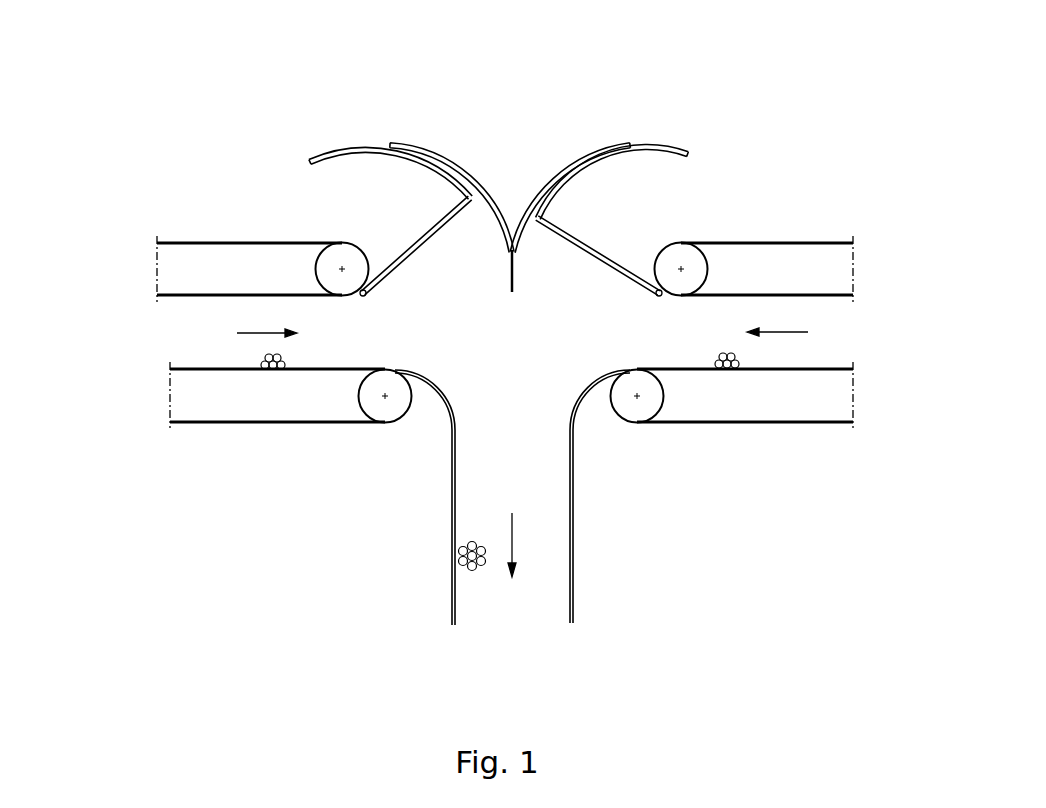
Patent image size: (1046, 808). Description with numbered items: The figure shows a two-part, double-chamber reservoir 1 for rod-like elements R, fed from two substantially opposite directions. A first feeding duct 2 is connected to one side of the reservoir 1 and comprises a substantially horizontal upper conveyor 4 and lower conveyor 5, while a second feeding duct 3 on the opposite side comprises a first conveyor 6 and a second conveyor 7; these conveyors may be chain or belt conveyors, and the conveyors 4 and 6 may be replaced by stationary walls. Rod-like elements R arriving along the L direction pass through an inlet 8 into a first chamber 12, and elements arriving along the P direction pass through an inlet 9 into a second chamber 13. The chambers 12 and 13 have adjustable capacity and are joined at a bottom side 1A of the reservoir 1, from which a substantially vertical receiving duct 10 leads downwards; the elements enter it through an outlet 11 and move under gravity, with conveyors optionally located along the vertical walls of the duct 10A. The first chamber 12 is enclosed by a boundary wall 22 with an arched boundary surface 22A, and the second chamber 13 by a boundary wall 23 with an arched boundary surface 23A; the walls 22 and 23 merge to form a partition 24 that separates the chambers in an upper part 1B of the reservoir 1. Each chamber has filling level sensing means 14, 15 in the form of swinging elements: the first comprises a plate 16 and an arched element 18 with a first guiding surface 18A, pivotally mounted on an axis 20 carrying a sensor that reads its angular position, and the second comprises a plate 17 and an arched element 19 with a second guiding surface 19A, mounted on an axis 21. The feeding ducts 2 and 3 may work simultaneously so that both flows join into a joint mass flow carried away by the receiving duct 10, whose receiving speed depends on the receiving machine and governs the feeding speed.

The reservoir 1 is at (501, 181).
The bottom side of the reservoir 1A is at (510, 350).
The upper part of the reservoir 1B is at (500, 282).
The first feeding duct 2 is at (195, 333).
The second feeding duct 3 is at (830, 333).
The upper conveyor 4 is at (233, 293).
The lower conveyor 5 is at (235, 368).
The first conveyor 6 is at (778, 295).
The second conveyor 7 is at (773, 370).
The inlet 8 is at (337, 337).
The inlet 9 is at (683, 337).
The receiving duct 10 is at (540, 567).
The vertical walls of the duct 10A is at (450, 530).
The outlet 11 is at (508, 425).
The first chamber 12 is at (448, 280).
The second chamber 13 is at (570, 282).
The filling level sensing means 14 is at (287, 170).
The filling level sensing means 15 is at (736, 168).
The plate 16 is at (440, 166).
The plate 17 is at (592, 183).
The arched element 18 is at (338, 152).
The first guiding surface 18A is at (363, 148).
The arched element 19 is at (688, 156).
The second guiding surface 19A is at (650, 148).
The axis 20 is at (363, 293).
The axis 21 is at (662, 291).
The boundary wall 22 is at (468, 184).
The arched boundary surface 22A is at (497, 237).
The boundary wall 23 is at (574, 164).
The arched boundary surface 23A is at (518, 242).
The partition 24 is at (516, 240).
The L direction L is at (255, 333).
The P direction P is at (812, 333).
The rod-like elements R is at (268, 368).